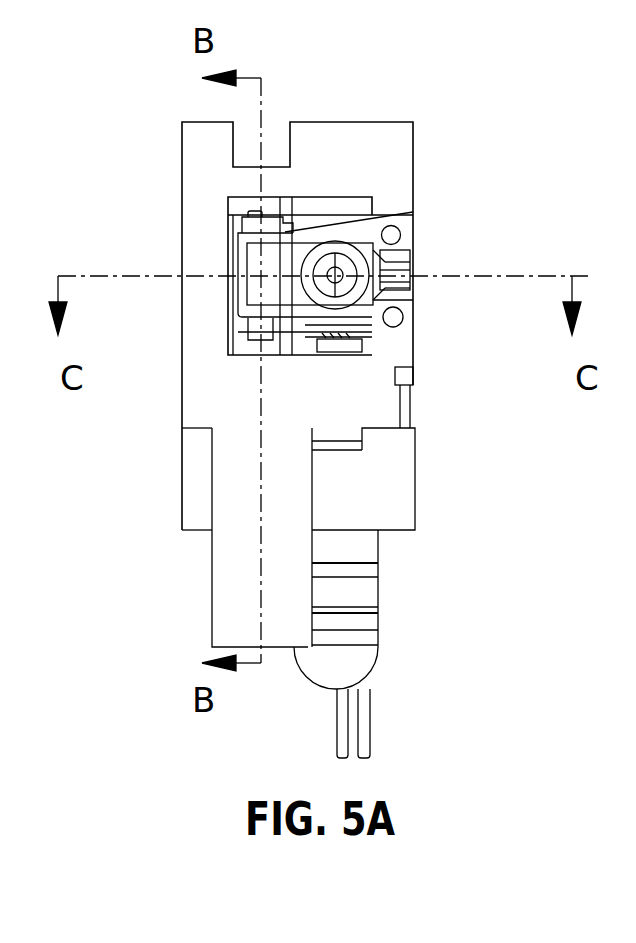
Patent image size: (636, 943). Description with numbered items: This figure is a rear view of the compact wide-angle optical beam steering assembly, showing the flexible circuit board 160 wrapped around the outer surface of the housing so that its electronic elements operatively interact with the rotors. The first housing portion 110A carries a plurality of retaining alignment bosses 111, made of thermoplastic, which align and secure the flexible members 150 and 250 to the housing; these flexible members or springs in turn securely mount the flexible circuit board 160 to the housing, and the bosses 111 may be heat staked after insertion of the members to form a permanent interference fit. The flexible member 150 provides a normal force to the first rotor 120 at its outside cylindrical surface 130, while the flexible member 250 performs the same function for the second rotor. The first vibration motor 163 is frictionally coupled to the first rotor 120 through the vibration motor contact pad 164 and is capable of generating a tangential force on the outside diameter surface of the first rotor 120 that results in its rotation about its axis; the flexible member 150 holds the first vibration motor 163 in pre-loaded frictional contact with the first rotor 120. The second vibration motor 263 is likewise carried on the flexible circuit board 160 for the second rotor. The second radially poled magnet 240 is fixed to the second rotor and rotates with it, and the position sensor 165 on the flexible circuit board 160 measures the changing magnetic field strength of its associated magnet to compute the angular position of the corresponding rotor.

The first housing portion 110A is at (193, 145).
The flexible circuit board 160 is at (193, 243).
The second vibration motor 263 is at (268, 212).
The flexible member 250 is at (308, 232).
The second radially poled magnet 240 is at (343, 267).
The outside cylindrical surface 130 is at (400, 262).
The vibration motor contact pad 164 is at (403, 268).
The first vibration motor 163 is at (400, 272).
The flexible member 150 is at (385, 285).
The first rotor 120 is at (405, 307).
The retaining alignment bosses 111 is at (398, 226).
The position sensor 165 is at (337, 335).